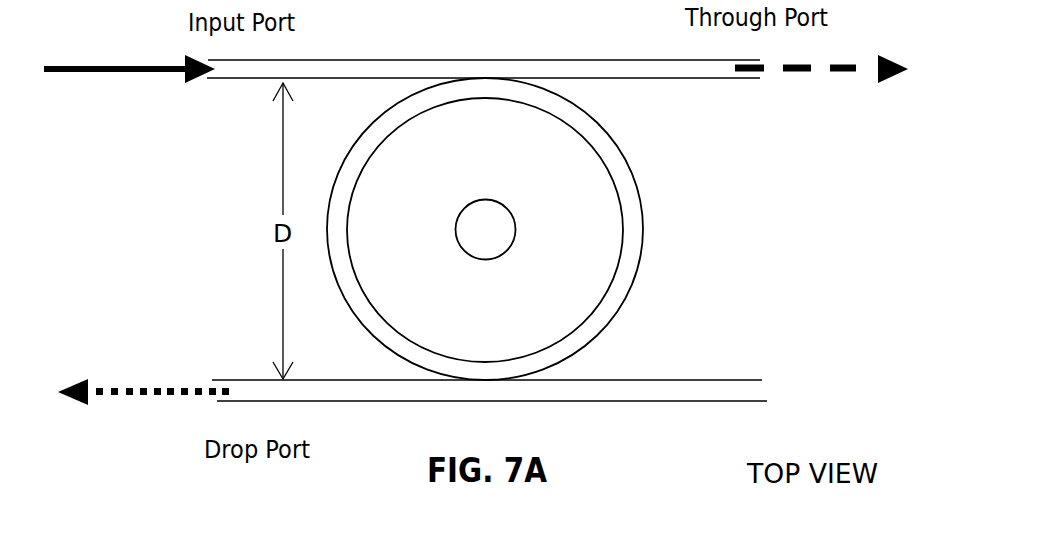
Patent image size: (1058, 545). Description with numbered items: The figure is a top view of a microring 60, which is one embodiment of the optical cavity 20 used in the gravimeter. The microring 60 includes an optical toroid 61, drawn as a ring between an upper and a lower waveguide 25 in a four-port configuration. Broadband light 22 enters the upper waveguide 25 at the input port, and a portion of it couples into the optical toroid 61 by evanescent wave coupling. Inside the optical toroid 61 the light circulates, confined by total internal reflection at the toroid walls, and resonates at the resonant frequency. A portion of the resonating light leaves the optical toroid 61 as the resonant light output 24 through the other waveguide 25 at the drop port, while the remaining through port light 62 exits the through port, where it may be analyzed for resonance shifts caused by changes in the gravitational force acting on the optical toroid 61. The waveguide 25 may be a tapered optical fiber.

The optical cavity 20 is at (552, 229).
The broadband light 22 is at (118, 72).
The resonant light output 24 is at (182, 390).
The waveguide 25 is at (238, 79).
The microring 60 is at (557, 286).
The optical toroid 61 is at (627, 245).
The through port light 62 is at (800, 70).